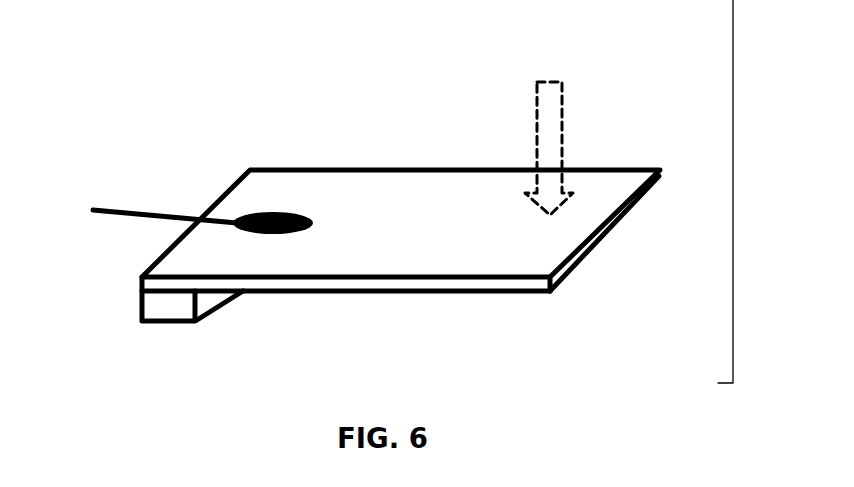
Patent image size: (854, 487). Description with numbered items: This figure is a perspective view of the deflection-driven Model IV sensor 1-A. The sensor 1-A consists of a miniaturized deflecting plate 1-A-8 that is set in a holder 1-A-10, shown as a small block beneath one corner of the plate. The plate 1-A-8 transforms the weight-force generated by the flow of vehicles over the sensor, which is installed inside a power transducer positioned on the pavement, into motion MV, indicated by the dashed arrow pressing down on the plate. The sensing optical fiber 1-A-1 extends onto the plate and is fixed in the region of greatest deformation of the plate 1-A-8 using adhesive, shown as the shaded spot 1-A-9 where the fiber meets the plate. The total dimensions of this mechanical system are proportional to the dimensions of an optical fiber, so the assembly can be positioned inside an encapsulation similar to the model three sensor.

The Model IV sensor 1-A is at (733, 187).
The sensing optical fiber 1-A-1 is at (130, 215).
The miniaturized deflecting plate 1-A-8 is at (633, 168).
The contact region 1-A-9 is at (285, 213).
The holder 1-A-10 is at (168, 308).
The motion MV is at (552, 80).